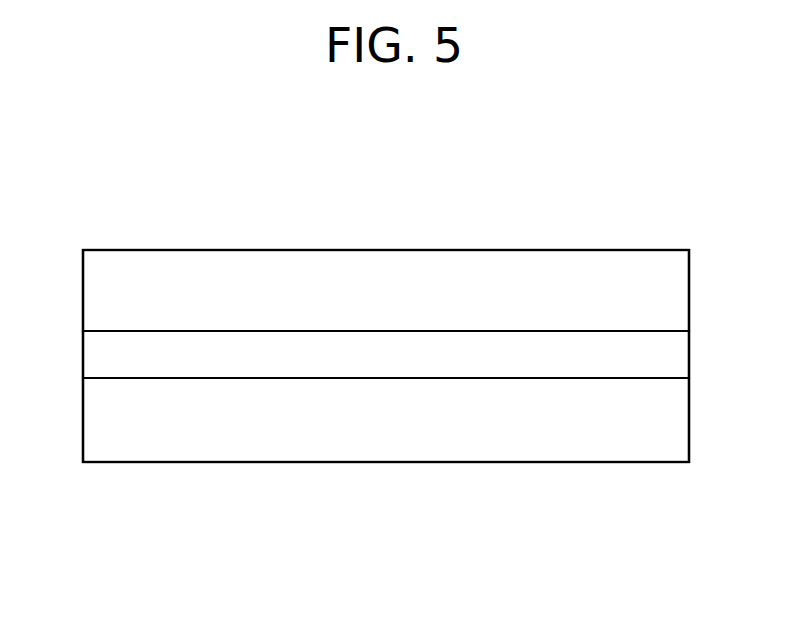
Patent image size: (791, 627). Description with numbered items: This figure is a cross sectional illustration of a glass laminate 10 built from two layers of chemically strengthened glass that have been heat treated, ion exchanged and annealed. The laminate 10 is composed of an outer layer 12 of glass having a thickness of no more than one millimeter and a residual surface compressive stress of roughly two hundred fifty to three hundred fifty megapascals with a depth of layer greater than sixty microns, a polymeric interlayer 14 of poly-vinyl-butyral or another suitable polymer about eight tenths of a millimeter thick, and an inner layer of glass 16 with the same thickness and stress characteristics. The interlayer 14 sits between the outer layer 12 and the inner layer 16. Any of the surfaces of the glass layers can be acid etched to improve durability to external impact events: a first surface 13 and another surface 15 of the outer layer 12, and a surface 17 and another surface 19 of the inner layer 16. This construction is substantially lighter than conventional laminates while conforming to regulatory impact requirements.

The laminate 10 is at (178, 512).
The outer layer 12 is at (600, 276).
The first surface 13 is at (387, 249).
The polymeric interlayer 14 is at (658, 361).
The first surface 15 is at (210, 330).
The inner layer 16 is at (625, 427).
The surface 17 is at (105, 378).
The surface 19 is at (395, 462).